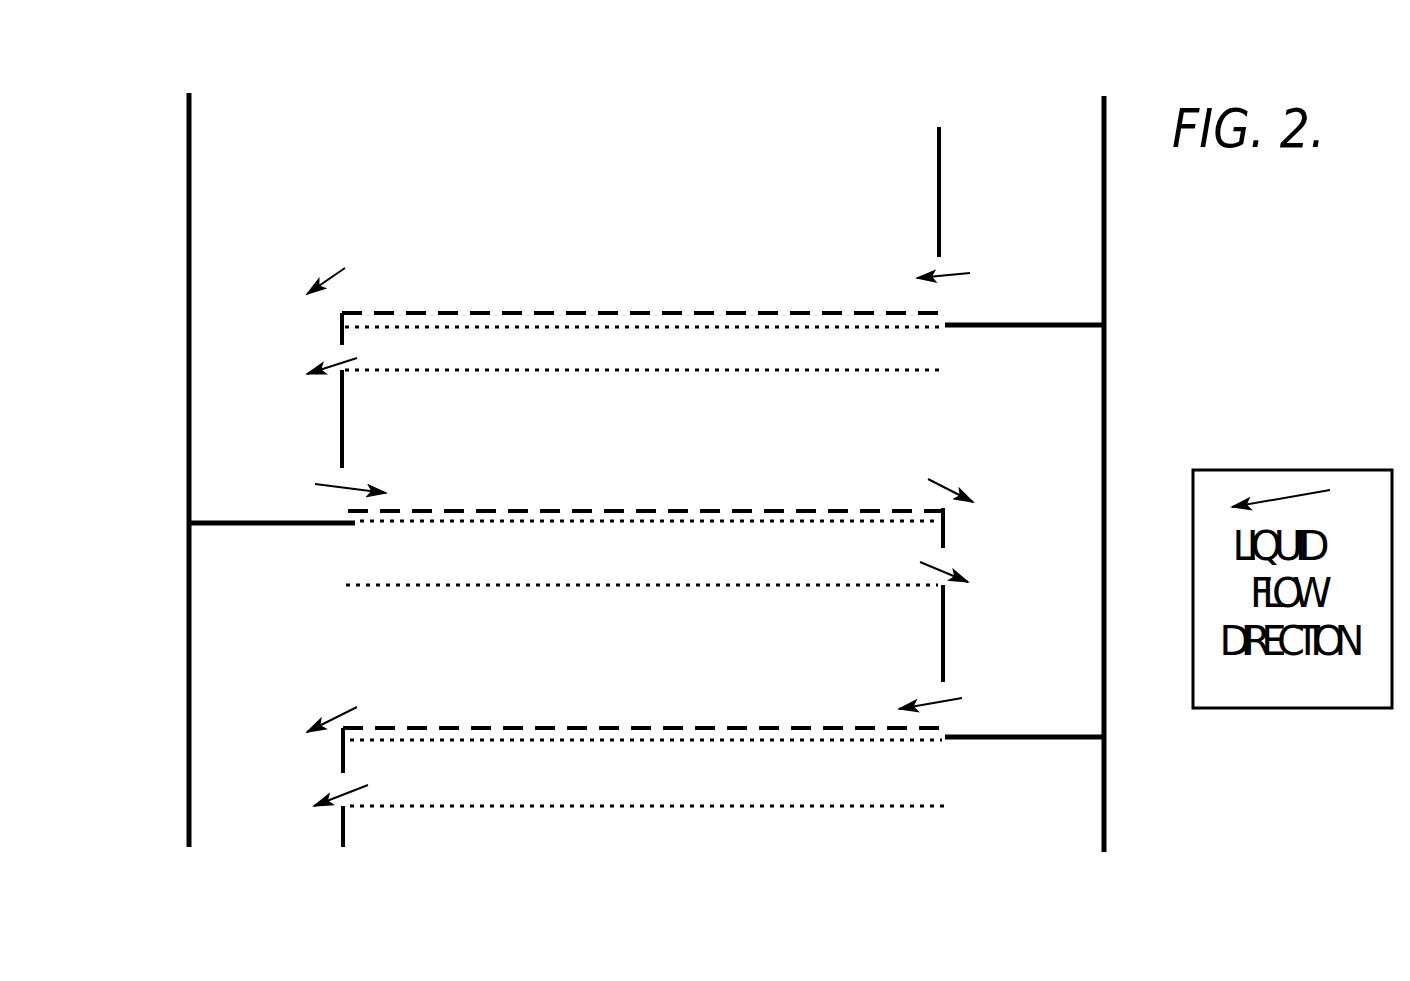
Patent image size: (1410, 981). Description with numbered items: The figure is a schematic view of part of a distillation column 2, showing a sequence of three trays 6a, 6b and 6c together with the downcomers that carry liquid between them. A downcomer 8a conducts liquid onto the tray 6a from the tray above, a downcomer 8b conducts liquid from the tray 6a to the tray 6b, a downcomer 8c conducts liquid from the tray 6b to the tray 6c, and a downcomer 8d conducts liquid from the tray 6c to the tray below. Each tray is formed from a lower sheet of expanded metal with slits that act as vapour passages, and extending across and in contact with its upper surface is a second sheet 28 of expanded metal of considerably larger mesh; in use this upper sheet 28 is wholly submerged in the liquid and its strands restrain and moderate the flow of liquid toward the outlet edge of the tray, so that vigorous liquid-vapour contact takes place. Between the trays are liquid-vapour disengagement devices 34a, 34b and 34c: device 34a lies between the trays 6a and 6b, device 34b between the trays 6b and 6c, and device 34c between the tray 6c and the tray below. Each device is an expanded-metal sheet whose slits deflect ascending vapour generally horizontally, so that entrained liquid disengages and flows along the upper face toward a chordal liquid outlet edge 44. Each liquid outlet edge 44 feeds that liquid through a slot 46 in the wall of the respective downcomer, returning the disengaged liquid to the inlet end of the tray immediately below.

The column 2 is at (176, 306).
The downcomer 8a is at (1038, 226).
The downcomer 8b is at (258, 432).
The downcomer 8c is at (1043, 663).
The downcomer 8d is at (237, 755).
The tray 6a is at (890, 328).
The tray 6b is at (945, 537).
The tray 6c is at (880, 738).
The second sheet of expanded metal 28 is at (480, 312).
The liquid-vapour disengagement device 34a is at (780, 368).
The liquid-vapour disengagement device 34b is at (673, 585).
The liquid-vapour disengagement device 34c is at (535, 808).
The liquid outlet edge 44 is at (345, 370).
The slot 46 is at (340, 352).